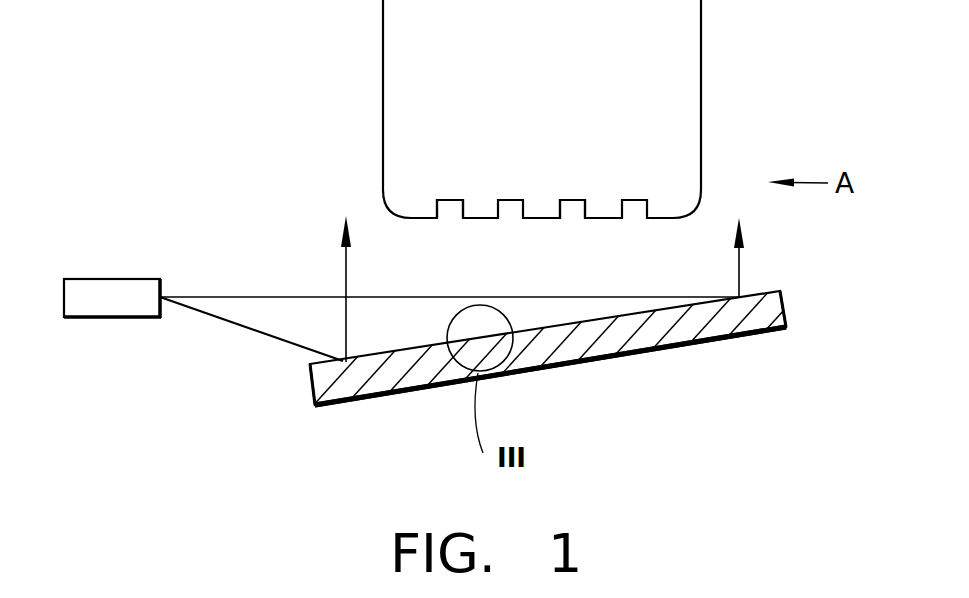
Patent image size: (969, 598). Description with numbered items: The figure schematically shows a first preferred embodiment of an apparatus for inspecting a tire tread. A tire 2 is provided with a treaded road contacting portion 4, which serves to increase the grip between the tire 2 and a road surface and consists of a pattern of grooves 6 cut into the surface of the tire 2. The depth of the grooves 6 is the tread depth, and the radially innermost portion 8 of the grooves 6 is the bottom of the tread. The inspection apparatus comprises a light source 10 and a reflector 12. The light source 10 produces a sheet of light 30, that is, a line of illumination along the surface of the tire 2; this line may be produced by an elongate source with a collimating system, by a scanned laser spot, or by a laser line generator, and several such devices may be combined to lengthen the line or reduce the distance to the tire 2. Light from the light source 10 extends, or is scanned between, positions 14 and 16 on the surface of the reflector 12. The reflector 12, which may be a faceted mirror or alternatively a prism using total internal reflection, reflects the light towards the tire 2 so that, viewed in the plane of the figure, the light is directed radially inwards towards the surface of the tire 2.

The tire 2 is at (701, 131).
The treaded road contacting portion 4 is at (517, 120).
The grooves 6 is at (573, 208).
The radially innermost portion of the grooves 8 is at (451, 200).
The light source 10 is at (117, 303).
The reflector 12 is at (732, 303).
The position on the reflector surface 14 is at (310, 372).
The position on the reflector surface 16 is at (747, 288).
The sheet of light 30 is at (342, 262).